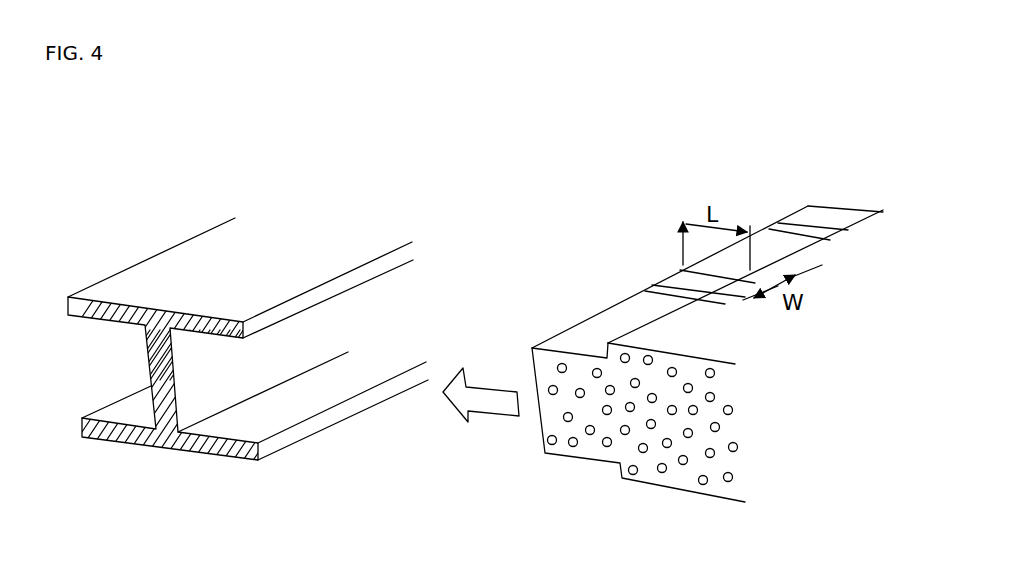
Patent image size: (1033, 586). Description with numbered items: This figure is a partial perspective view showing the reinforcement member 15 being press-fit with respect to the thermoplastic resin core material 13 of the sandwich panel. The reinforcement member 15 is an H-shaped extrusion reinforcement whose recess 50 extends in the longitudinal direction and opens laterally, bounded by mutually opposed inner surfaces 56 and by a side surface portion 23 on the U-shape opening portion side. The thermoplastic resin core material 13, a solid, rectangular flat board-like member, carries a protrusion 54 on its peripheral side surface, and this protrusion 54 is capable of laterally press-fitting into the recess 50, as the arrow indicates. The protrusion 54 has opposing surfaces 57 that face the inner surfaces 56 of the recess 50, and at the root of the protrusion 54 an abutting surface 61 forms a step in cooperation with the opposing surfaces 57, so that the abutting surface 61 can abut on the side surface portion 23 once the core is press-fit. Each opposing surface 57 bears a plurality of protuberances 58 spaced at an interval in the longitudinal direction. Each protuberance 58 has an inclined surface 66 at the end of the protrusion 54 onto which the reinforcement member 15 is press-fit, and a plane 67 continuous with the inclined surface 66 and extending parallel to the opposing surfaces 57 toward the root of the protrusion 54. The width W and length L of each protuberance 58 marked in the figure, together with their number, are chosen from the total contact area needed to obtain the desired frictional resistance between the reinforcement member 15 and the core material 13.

The reinforcement member 15 is at (182, 257).
The side surface portion 23 is at (380, 268).
The recess 50 is at (215, 402).
The inner surfaces 56 is at (285, 408).
The opposing surfaces 57 is at (585, 338).
The inclined surface 66 is at (653, 283).
The protuberances 58 is at (676, 265).
The plane 67 is at (688, 264).
The protrusion 54 is at (582, 458).
The abutting surface 61 is at (612, 478).
The thermoplastic resin core material 13 is at (690, 472).